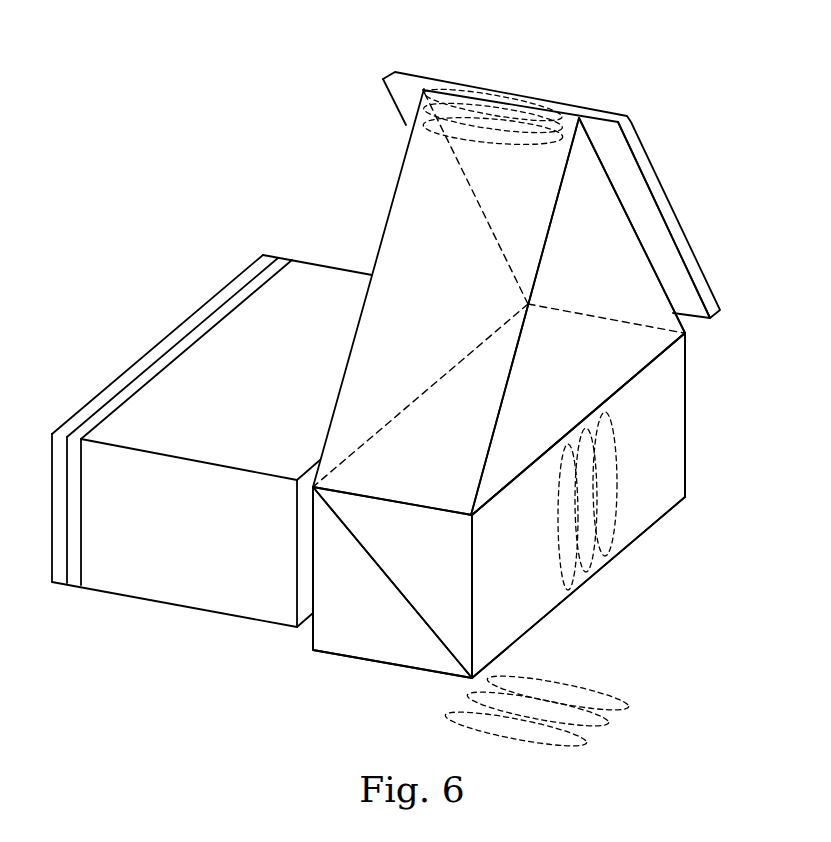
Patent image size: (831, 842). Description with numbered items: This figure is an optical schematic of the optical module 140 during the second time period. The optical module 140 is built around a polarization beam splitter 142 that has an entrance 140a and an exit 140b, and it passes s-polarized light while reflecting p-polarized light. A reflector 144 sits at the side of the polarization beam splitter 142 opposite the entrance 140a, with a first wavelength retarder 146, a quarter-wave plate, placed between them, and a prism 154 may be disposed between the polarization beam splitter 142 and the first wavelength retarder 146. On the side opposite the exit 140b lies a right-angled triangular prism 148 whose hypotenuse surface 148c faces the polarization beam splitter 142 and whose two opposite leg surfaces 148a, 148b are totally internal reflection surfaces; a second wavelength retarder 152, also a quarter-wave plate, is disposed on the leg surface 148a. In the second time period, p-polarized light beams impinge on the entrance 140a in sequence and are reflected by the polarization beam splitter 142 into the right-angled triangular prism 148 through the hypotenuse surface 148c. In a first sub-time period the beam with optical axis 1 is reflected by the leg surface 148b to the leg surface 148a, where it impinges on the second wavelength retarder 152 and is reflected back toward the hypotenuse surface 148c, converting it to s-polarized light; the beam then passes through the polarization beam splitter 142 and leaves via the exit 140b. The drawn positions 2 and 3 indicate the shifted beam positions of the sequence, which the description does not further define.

The optical module 140 is at (53, 83).
The entrance 140a is at (645, 480).
The exit 140b is at (387, 665).
The polarization beam splitter 142 is at (672, 455).
The reflector 144 is at (138, 365).
The first wavelength retarder 146 is at (173, 355).
The right-angled triangular prism 148 is at (618, 230).
The leg surface 148a is at (597, 137).
The leg surface 148b is at (437, 168).
The hypotenuse surface 148c is at (667, 353).
The second wavelength retarder 152 is at (655, 177).
The prism 154 is at (325, 298).
The optical axis 1 is at (520, 373).
The second position 2 is at (516, 369).
The third position 3 is at (519, 394).